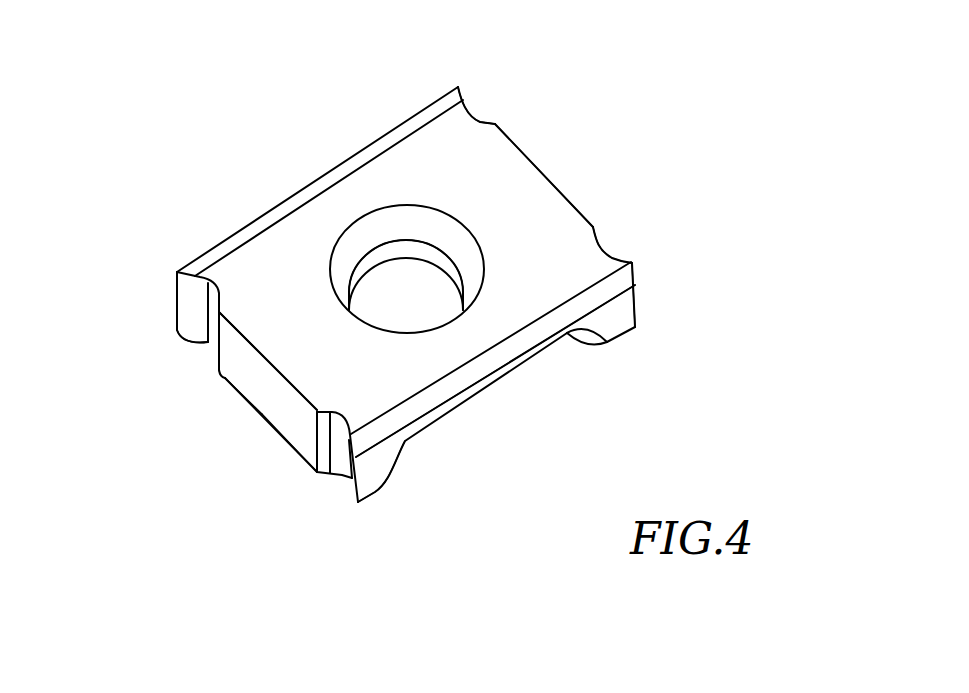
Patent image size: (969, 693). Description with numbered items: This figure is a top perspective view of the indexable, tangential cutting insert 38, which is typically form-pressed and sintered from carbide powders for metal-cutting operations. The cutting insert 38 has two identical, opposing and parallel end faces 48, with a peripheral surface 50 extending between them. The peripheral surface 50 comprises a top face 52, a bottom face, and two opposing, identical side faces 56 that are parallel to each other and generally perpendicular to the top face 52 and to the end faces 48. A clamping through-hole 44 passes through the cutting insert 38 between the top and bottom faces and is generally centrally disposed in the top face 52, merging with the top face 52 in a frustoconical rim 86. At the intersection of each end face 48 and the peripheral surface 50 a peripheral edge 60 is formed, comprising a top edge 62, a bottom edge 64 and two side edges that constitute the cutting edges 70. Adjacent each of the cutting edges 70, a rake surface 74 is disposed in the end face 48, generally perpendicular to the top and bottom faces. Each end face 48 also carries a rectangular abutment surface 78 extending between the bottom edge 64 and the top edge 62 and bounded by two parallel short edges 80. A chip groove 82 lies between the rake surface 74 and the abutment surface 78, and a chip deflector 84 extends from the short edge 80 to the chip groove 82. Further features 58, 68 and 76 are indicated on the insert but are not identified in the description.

The cutting insert 38 is at (650, 134).
The clamping through-hole 44 is at (411, 205).
The end faces 48 is at (290, 422).
The peripheral surface 50 is at (644, 305).
The top face 52 is at (477, 152).
The side faces 56 is at (401, 483).
The front flange 58 is at (508, 343).
The peripheral edge 60 is at (222, 409).
The top edge 62 is at (532, 157).
The bottom edge 64 is at (262, 414).
The notch 68 is at (632, 265).
The cutting edges 70 is at (177, 302).
The rake surface 74 is at (177, 327).
The bend 76 is at (238, 381).
The abutment surface 78 is at (272, 428).
The short edges 80 is at (288, 446).
The chip groove 82 is at (208, 344).
The chip deflector 84 is at (317, 470).
The frustoconical rim 86 is at (355, 242).